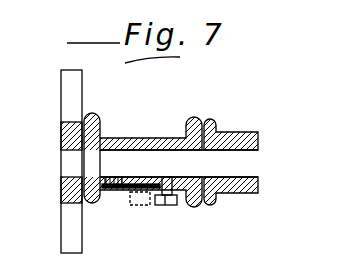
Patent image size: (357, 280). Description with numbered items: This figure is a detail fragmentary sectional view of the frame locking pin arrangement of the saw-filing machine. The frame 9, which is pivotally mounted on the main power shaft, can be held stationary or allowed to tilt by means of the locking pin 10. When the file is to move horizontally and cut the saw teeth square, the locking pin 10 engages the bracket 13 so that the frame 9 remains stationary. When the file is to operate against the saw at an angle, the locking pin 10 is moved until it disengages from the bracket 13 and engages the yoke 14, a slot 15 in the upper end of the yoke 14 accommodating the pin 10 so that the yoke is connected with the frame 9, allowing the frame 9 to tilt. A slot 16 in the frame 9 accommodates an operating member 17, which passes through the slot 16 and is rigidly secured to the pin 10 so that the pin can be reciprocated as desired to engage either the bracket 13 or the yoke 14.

The frame 9 is at (112, 138).
The locking pin 10 is at (247, 161).
The bracket 13 is at (243, 194).
The yoke 14 is at (70, 230).
The slot 15 is at (70, 156).
The slot 16 is at (118, 187).
The operating member 17 is at (166, 206).